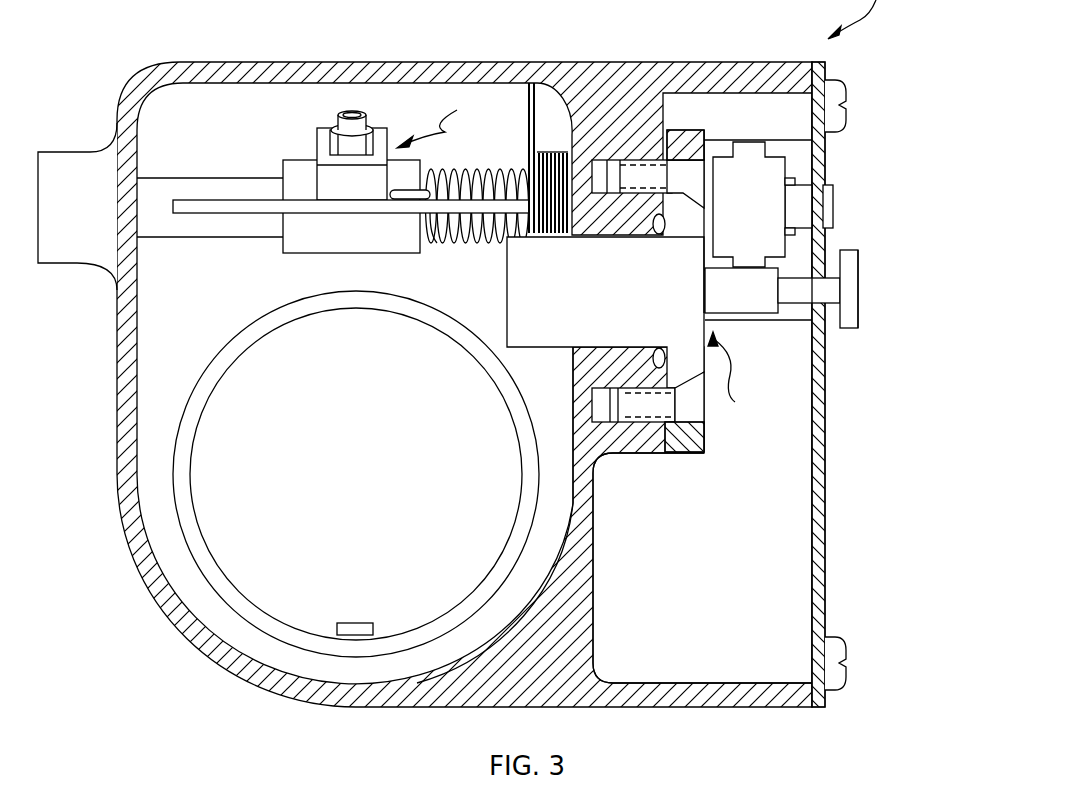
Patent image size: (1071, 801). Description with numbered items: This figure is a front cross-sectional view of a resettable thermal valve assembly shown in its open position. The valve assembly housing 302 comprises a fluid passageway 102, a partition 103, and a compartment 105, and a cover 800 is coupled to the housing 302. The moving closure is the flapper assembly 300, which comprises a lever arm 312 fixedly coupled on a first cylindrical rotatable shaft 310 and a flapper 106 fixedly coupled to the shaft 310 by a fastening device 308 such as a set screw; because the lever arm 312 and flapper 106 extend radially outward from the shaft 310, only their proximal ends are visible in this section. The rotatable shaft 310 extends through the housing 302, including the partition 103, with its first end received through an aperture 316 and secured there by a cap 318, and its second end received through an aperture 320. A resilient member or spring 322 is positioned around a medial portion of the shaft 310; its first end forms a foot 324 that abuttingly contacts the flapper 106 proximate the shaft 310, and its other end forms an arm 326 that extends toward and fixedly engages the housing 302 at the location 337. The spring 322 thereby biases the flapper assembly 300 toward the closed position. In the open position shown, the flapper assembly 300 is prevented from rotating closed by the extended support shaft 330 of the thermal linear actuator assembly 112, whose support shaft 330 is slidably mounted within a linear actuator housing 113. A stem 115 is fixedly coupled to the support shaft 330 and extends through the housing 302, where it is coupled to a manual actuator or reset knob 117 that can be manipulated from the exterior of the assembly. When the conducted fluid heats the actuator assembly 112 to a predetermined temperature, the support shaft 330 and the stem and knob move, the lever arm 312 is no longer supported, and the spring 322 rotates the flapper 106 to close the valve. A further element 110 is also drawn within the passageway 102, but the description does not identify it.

The fluid passageway 102 is at (337, 483).
The partition 103 is at (590, 558).
The compartment 105 is at (687, 625).
The flapper 106 is at (187, 213).
The stop 110 is at (352, 622).
The thermal linear actuator assembly 112 is at (734, 381).
The linear actuator housing 113 is at (570, 303).
The stem 115 is at (838, 287).
The manual actuator (reset knob) 117 is at (858, 312).
The flapper assembly 300 is at (455, 118).
The valve assembly housing 302 is at (665, 708).
The fastening device 308 is at (340, 140).
The first cylindrical rotatable shaft 310 is at (245, 230).
The lever arm 312 is at (753, 177).
The aperture 316 is at (138, 178).
The cap 318 is at (67, 258).
The aperture 320 is at (827, 228).
The resilient member (spring) 322 is at (475, 243).
The foot 324 is at (405, 205).
The arm 326 is at (528, 152).
The support shaft 330 is at (755, 298).
The engagement location 337 is at (536, 78).
The cover 800 is at (830, 542).